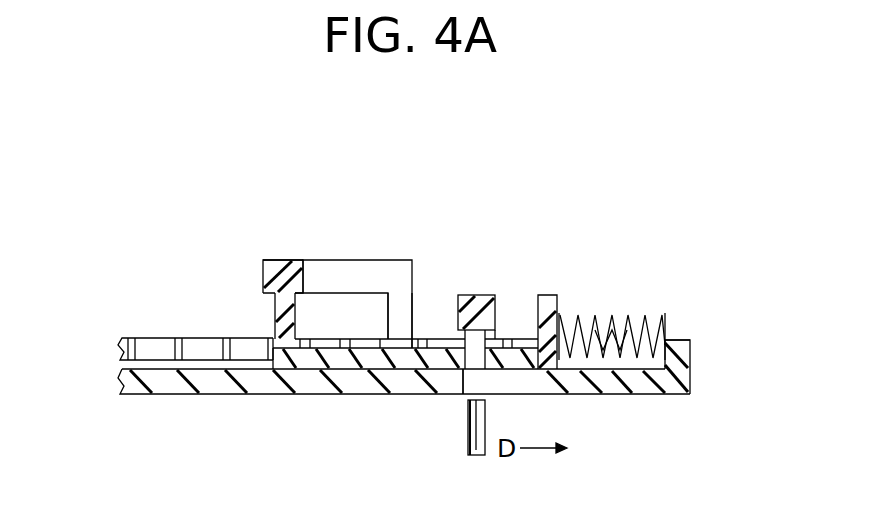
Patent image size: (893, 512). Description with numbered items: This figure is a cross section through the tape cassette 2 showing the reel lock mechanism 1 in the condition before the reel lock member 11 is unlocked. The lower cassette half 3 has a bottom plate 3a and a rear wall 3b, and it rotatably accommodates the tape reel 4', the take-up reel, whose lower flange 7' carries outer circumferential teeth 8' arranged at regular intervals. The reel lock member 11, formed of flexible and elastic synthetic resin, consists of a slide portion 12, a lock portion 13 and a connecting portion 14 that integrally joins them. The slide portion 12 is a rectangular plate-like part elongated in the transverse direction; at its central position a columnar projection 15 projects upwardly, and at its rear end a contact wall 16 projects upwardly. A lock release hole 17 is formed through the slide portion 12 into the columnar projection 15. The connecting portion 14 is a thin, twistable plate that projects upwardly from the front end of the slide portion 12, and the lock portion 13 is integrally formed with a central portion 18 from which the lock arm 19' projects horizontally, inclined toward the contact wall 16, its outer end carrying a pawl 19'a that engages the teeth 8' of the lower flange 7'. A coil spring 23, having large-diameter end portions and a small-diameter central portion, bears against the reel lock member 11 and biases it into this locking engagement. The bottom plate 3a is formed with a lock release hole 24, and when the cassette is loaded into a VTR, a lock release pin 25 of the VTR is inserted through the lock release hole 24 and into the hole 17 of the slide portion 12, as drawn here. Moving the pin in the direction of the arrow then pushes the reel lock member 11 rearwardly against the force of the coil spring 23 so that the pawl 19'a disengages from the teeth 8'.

The reel lock mechanism 1 is at (128, 220).
The tape cassette 2 is at (687, 395).
The cassette half 3 is at (690, 362).
The bottom plate 3a is at (642, 388).
The rear wall 3b is at (680, 336).
The tape reel 4' is at (163, 302).
The lower flange 7' is at (115, 310).
The outer circumferential teeth 8' is at (200, 312).
The reel lock member 11 is at (322, 234).
The slide portion 12 is at (321, 352).
The lock portion 13 is at (262, 282).
The connecting portion 14 is at (274, 318).
The columnar projection 15 is at (497, 312).
The contact wall 16 is at (557, 303).
The lock release hole 17 is at (474, 333).
The central portion 18 is at (263, 262).
The lock arm 19' is at (341, 258).
The pawl 19'a is at (439, 261).
The coil spring 23 is at (612, 320).
The lock release hole 24 is at (550, 380).
The lock release pin 25 is at (470, 422).